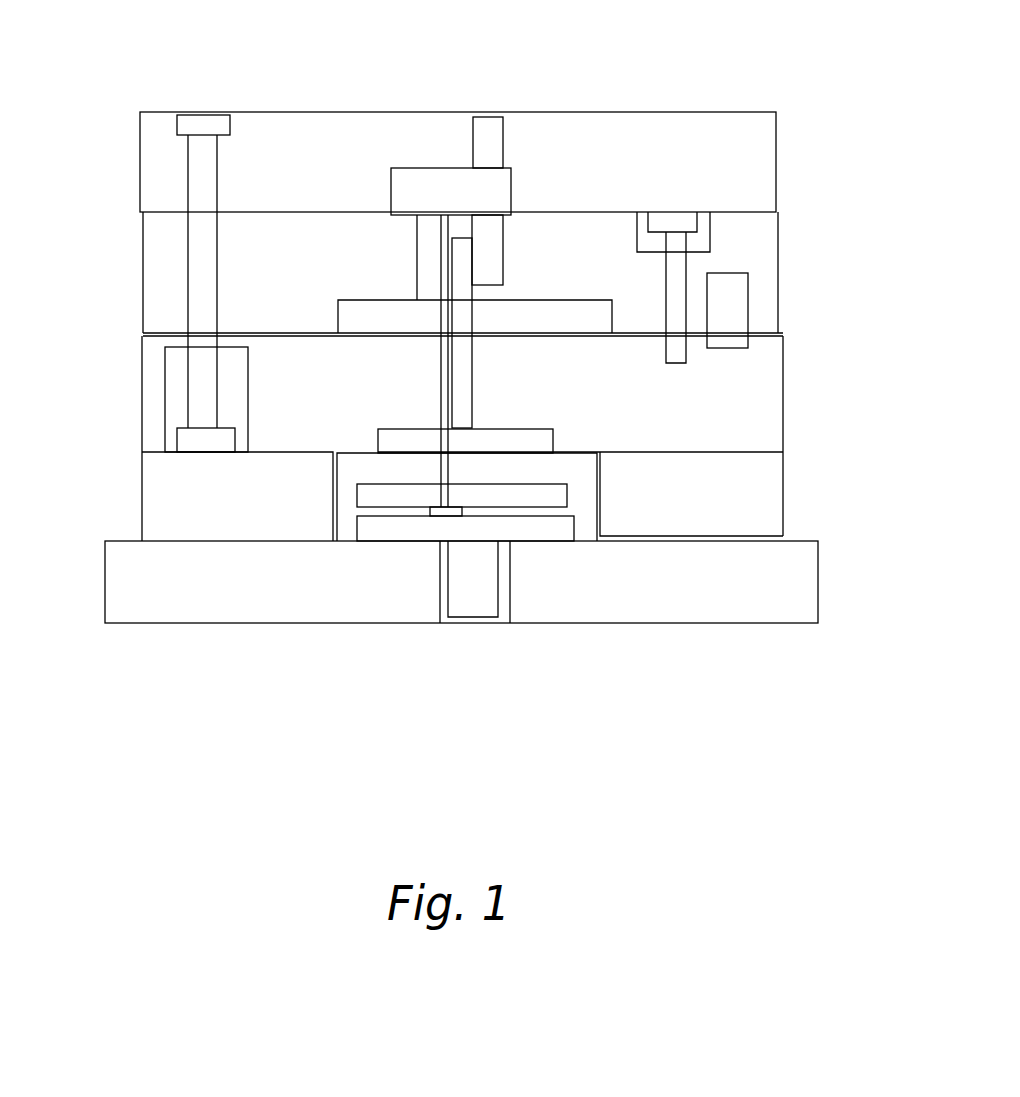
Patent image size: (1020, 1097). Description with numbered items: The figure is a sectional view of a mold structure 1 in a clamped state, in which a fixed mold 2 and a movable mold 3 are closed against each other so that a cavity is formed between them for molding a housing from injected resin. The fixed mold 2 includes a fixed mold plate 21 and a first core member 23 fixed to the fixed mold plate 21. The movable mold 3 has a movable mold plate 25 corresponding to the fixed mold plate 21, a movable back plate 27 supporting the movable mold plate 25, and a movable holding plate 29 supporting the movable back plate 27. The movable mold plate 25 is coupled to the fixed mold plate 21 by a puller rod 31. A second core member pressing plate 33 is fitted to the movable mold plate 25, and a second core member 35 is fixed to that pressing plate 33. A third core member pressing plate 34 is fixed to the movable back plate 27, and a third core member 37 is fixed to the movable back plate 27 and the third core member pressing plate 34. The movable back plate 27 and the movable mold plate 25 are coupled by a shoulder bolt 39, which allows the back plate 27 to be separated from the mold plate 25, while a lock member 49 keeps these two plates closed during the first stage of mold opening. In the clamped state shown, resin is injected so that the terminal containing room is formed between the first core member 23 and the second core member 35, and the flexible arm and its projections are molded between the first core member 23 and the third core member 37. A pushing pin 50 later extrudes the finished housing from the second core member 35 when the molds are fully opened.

The mold structure 1 is at (596, 80).
The fixed mold 2 is at (118, 162).
The movable mold 3 is at (118, 334).
The fixed mold plate 21 is at (712, 128).
The first core member 23 is at (487, 128).
The movable mold plate 25 is at (765, 232).
The movable back plate 27 is at (765, 404).
The movable holding plate 29 is at (805, 583).
The puller rod 31 is at (200, 263).
The second core member pressing plate 33 is at (583, 313).
The third core member pressing plate 34 is at (527, 438).
The second core member 35 is at (430, 247).
The third core member 37 is at (463, 392).
The shoulder bolt 39 is at (675, 322).
The lock member 49 is at (730, 333).
The pushing pin 50 is at (442, 406).